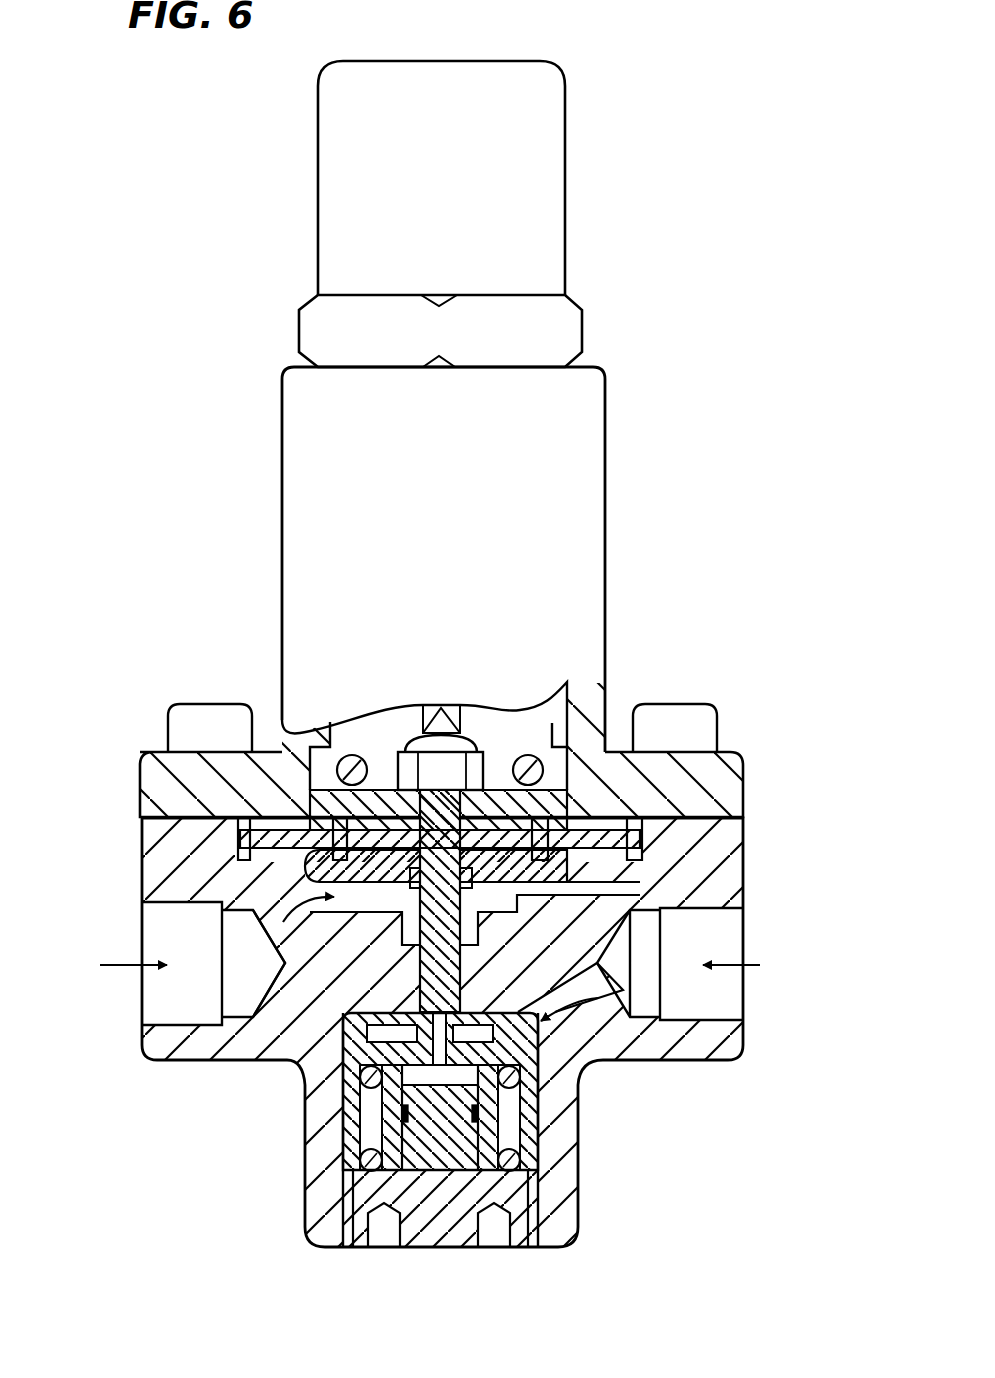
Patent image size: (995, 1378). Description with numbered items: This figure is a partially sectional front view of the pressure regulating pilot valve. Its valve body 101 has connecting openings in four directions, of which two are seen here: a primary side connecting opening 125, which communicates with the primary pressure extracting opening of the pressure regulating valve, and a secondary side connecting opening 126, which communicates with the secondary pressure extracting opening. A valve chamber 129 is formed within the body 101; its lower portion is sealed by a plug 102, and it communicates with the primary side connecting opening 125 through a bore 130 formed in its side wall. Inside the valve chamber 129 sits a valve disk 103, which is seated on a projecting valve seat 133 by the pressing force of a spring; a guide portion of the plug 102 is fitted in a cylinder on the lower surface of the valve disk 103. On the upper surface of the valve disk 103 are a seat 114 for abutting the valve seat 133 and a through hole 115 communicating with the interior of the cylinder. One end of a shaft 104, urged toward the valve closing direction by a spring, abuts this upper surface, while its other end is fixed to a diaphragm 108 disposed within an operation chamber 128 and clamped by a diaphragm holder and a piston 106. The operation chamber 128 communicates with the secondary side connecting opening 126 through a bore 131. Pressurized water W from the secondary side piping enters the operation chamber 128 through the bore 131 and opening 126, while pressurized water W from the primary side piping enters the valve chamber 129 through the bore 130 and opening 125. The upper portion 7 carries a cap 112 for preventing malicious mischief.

The pressure adjusting bonnet 7 is at (605, 498).
The valve body 101 is at (757, 774).
The plug 102 is at (433, 1247).
The valve disk 103 is at (517, 1210).
The shaft 104 is at (398, 922).
The piston 106 is at (575, 750).
The diaphragm 108 is at (600, 840).
The cap 112 is at (565, 82).
The seat 114 is at (543, 1065).
The through hole 115 is at (435, 1015).
The primary side connecting opening 125 is at (745, 957).
The secondary side connecting opening 126 is at (152, 1003).
The operation chamber 128 is at (570, 888).
The valve chamber 129 is at (528, 1133).
The bore 130 is at (568, 1015).
The bore 131 is at (277, 925).
The valve seat 133 is at (360, 1062).
The pressurized water W is at (297, 920).